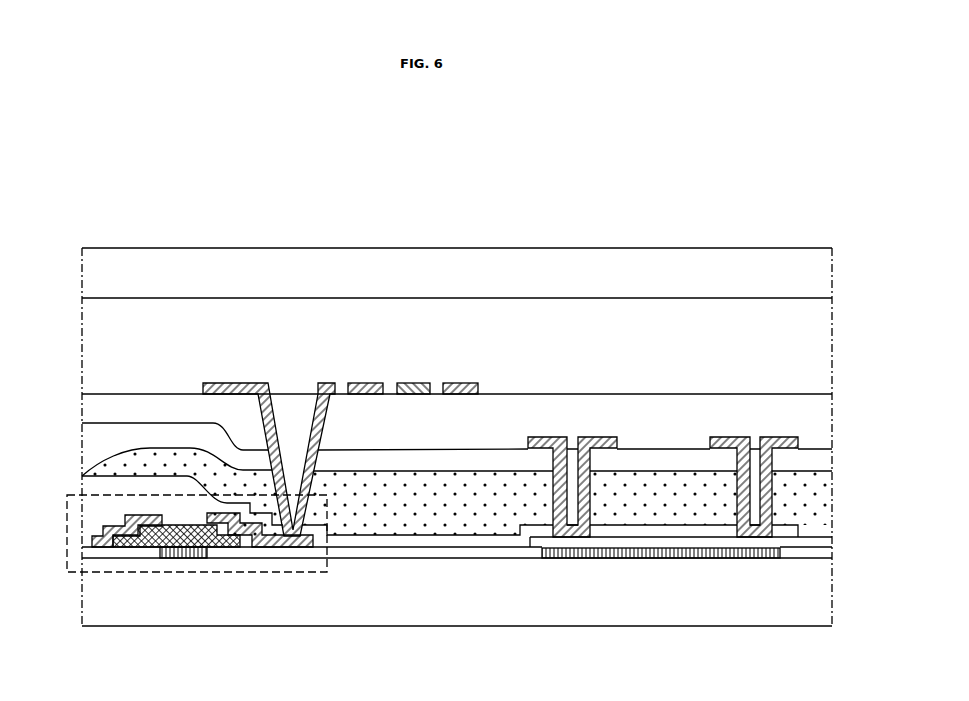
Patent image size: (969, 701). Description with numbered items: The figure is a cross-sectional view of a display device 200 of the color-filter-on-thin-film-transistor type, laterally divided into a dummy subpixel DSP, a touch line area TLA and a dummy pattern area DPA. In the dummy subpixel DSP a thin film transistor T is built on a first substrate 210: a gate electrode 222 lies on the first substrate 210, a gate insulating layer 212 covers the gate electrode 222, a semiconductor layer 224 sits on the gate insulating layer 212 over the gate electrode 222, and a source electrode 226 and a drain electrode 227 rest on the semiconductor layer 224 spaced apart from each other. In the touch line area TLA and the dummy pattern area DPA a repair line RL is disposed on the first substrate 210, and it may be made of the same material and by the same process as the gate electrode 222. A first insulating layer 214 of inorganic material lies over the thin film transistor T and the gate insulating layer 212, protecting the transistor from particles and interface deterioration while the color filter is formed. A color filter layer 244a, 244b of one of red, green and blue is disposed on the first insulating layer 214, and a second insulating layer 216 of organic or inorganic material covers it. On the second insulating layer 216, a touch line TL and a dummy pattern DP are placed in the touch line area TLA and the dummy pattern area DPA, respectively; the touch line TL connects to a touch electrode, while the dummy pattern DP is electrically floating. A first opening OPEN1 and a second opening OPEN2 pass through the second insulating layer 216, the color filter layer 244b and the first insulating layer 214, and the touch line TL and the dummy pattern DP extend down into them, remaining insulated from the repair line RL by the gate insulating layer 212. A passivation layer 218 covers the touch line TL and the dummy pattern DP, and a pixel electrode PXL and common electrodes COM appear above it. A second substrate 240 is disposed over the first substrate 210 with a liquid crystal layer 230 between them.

The display device 200 is at (831, 116).
The first substrate 210 is at (818, 596).
The gate insulating layer 212 is at (818, 558).
The first insulating layer 214 is at (818, 544).
The second insulating layer 216 is at (818, 463).
The passivation layer 218 is at (818, 433).
The liquid crystal layer 230 is at (818, 327).
The second substrate 240 is at (818, 272).
The color filter layer 244a is at (97, 488).
The color filter layer 244b is at (418, 500).
The gate electrode 222 is at (181, 559).
The semiconductor layer 224 is at (236, 548).
The source electrode 226 is at (95, 523).
The drain electrode 227 is at (283, 548).
The thin film transistor T is at (140, 572).
The pixel electrode PXL is at (333, 382).
The common electrode COM is at (375, 382).
The touch line TL is at (600, 436).
The dummy pattern DP is at (728, 436).
The repair line RL is at (730, 559).
The first opening OPEN1 is at (590, 492).
The second opening OPEN2 is at (771, 492).
The dummy subpixel DSP is at (502, 183).
The touch line area TLA is at (682, 183).
The dummy pattern area DPA is at (832, 183).